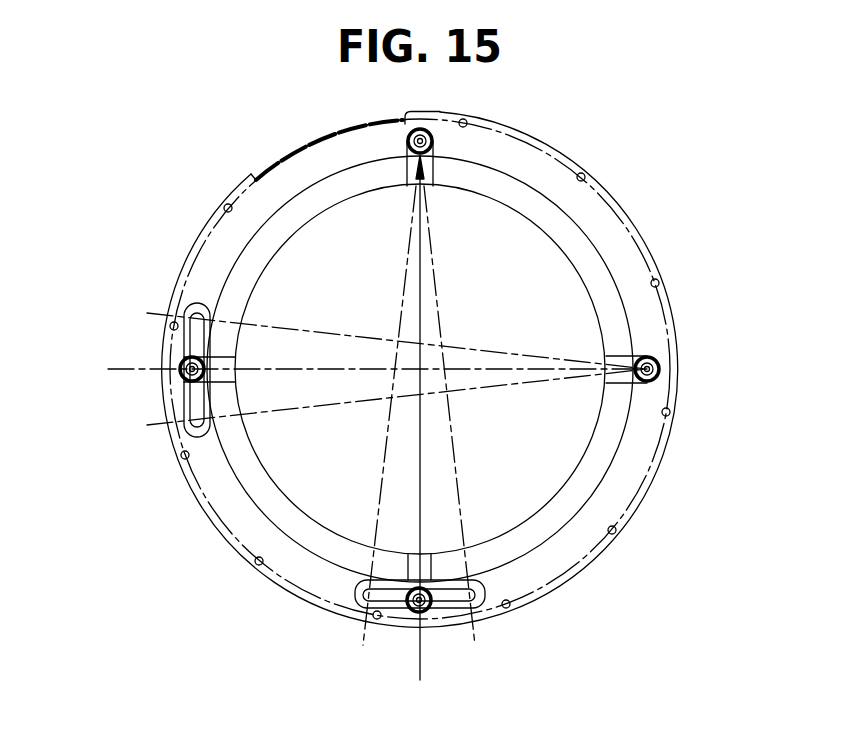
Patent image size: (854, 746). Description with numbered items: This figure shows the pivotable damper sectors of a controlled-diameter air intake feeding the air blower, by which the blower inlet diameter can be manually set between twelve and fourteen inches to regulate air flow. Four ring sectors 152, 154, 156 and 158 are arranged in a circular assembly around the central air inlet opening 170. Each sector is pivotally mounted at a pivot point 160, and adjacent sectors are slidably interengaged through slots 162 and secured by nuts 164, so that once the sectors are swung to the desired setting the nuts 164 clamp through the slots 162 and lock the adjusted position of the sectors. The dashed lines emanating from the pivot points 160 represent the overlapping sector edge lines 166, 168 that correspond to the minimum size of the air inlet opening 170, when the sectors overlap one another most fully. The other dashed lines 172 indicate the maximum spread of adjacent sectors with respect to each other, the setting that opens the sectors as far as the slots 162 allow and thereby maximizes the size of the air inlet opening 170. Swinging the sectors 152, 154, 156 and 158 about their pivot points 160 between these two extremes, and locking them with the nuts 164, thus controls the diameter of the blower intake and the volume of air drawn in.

The ring sector 152 is at (563, 173).
The ring sector 154 is at (295, 163).
The ring sector 156 is at (243, 515).
The ring sector 158 is at (635, 465).
The pivot point 160 is at (430, 131).
The slot 162 is at (183, 400).
The nut 164 is at (182, 360).
The sector edge line 166 is at (302, 330).
The sector edge line 168 is at (298, 408).
The air inlet opening 170 is at (537, 269).
The dashed line 172 is at (357, 368).